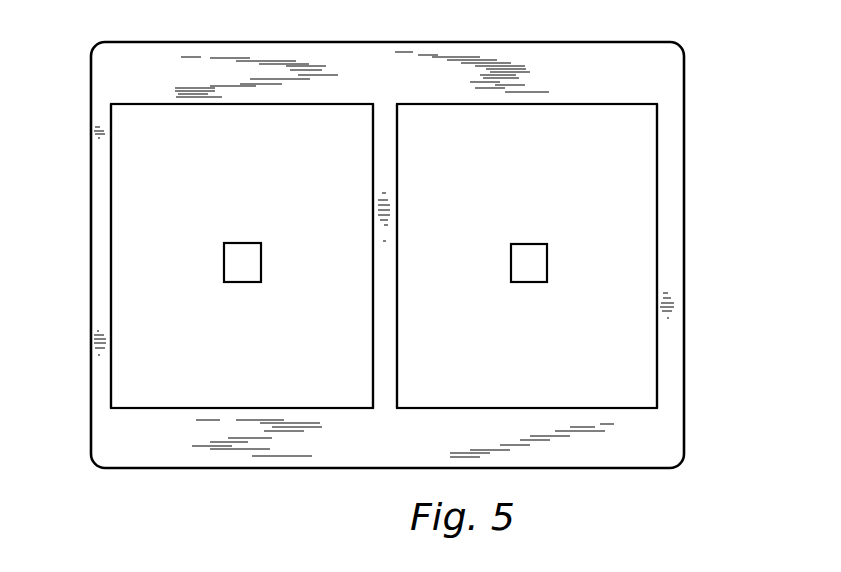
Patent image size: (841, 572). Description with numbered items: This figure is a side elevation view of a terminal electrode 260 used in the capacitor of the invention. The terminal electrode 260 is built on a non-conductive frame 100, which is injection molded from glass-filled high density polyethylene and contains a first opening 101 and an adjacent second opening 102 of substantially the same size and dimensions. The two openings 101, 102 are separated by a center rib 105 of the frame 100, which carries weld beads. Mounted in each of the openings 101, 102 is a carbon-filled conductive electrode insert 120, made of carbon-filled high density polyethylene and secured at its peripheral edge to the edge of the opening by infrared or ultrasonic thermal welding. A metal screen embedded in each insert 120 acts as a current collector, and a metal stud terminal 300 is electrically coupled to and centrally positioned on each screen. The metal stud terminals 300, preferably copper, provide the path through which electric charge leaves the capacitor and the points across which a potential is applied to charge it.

The frame 100 is at (466, 52).
The first opening 101 is at (552, 103).
The second opening 102 is at (188, 105).
The center rib 105 is at (387, 395).
The conductive electrode insert 120 is at (130, 148).
The terminal electrode 260 is at (300, 120).
The metal stud terminal 300 is at (227, 257).